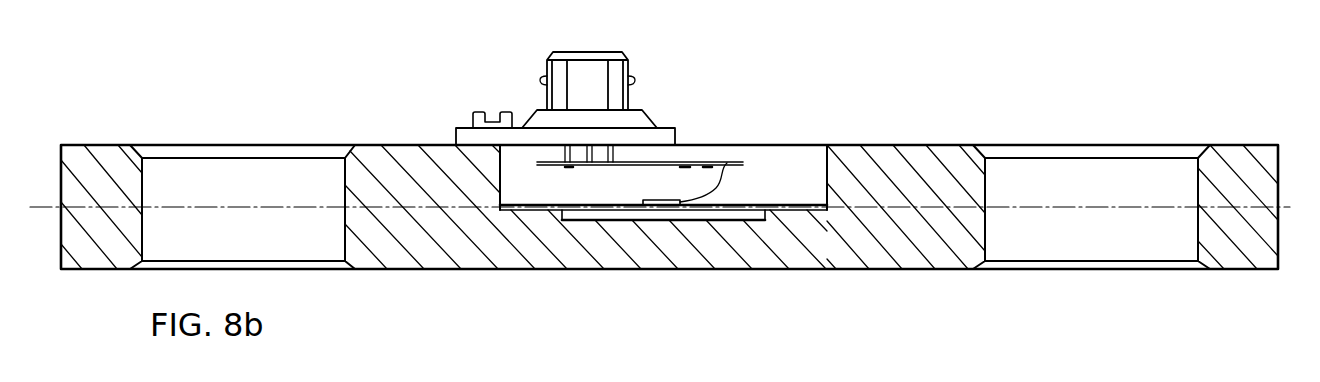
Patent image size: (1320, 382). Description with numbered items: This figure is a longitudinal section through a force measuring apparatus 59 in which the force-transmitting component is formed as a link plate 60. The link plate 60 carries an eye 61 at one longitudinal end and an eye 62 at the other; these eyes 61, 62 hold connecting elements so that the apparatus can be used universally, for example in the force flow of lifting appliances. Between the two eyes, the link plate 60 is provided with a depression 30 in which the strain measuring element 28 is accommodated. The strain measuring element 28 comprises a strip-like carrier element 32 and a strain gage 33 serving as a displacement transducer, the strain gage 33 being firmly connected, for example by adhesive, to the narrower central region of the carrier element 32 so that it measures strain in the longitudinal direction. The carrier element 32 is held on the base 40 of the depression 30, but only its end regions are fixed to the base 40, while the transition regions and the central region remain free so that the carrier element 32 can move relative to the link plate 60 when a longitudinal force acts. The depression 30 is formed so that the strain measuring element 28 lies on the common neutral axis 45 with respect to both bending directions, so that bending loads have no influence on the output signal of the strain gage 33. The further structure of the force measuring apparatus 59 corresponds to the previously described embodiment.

The strain measuring element 28 is at (591, 233).
The depression 30 is at (782, 163).
The carrier element 32 is at (707, 207).
The strain gage 33 is at (657, 207).
The base of the depression 40 is at (787, 207).
The neutral axis 45 is at (384, 210).
The force measuring apparatus 59 is at (910, 122).
The link plate 60 is at (925, 235).
The eye 61 is at (298, 242).
The eye 62 is at (1108, 233).